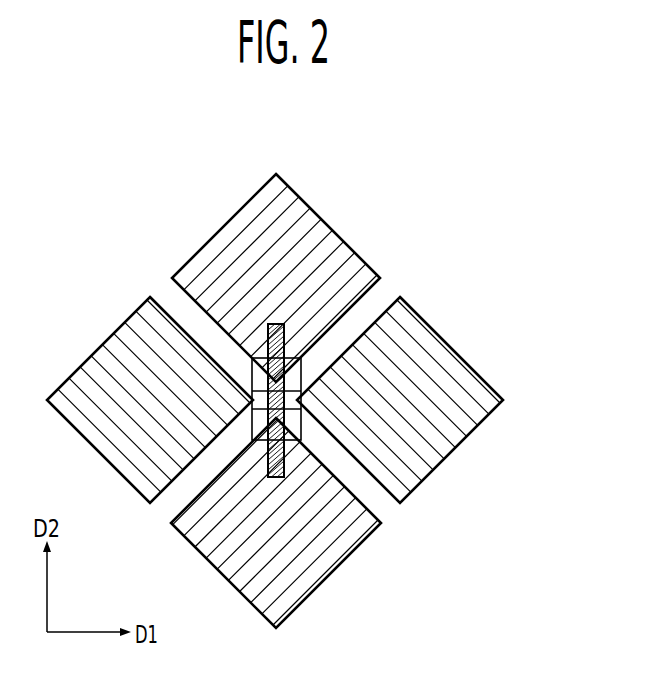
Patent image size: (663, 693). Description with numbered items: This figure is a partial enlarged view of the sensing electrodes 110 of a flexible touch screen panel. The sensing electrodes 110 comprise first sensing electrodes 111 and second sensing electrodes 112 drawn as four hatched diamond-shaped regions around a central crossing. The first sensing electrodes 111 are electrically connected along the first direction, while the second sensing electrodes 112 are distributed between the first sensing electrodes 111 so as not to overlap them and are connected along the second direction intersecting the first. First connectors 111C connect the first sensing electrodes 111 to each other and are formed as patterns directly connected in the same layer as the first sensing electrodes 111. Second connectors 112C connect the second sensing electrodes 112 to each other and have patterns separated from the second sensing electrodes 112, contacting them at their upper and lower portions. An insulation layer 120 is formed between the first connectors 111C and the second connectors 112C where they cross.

The sensing electrode 110 is at (502, 181).
The first sensing electrodes 111 is at (412, 334).
The second sensing electrodes 112 is at (347, 262).
The first connectors 111C is at (301, 434).
The second connectors 112C is at (252, 378).
The insulation layer 120 is at (252, 424).